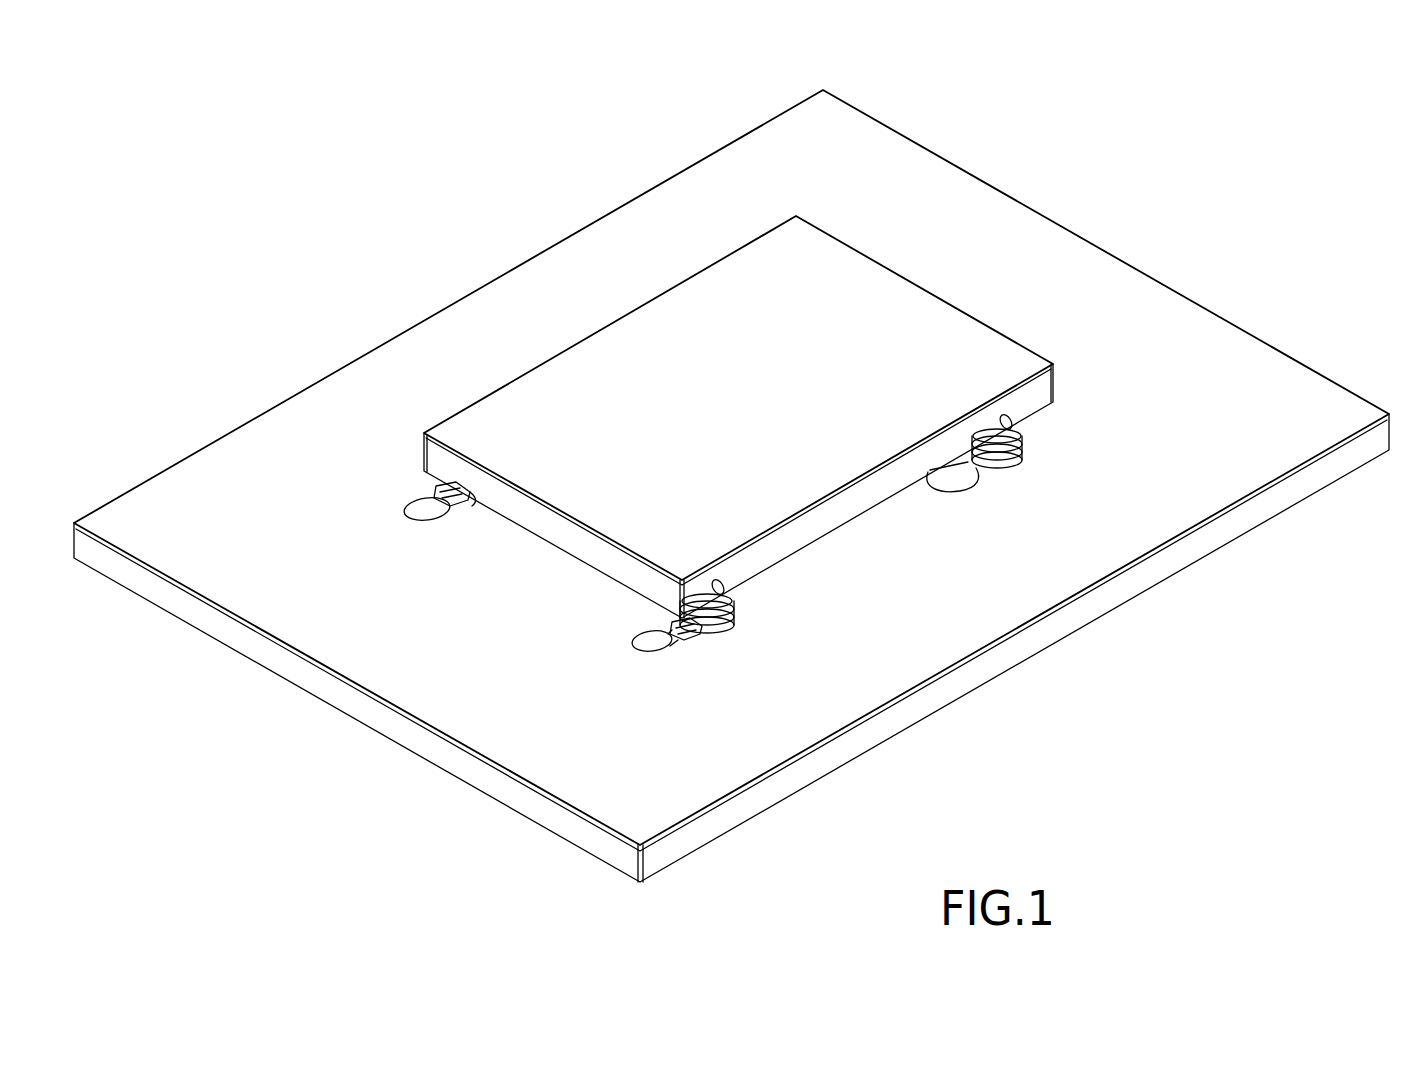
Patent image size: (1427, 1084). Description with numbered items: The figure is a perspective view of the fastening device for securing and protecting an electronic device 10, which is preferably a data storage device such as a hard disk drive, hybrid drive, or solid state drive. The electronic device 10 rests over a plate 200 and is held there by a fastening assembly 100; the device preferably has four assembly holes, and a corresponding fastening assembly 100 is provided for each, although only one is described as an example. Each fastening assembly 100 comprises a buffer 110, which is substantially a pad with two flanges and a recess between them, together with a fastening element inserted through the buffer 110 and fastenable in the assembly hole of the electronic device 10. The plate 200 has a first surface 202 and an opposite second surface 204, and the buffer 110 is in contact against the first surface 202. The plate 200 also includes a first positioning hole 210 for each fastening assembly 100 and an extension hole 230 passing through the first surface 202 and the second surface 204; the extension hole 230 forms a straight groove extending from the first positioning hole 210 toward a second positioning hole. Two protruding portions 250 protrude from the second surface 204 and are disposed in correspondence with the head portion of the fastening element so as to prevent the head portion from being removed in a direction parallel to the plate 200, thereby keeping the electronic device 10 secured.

The electronic device 10 is at (601, 326).
The fastening assembly 100 is at (1038, 493).
The buffer 110 is at (733, 607).
The plate 200 is at (731, 486).
The first surface 202 is at (1183, 327).
The second surface 204 is at (1231, 541).
The first positioning hole 210 is at (967, 477).
The extension hole 230 is at (982, 470).
The protruding portion 250 is at (690, 637).